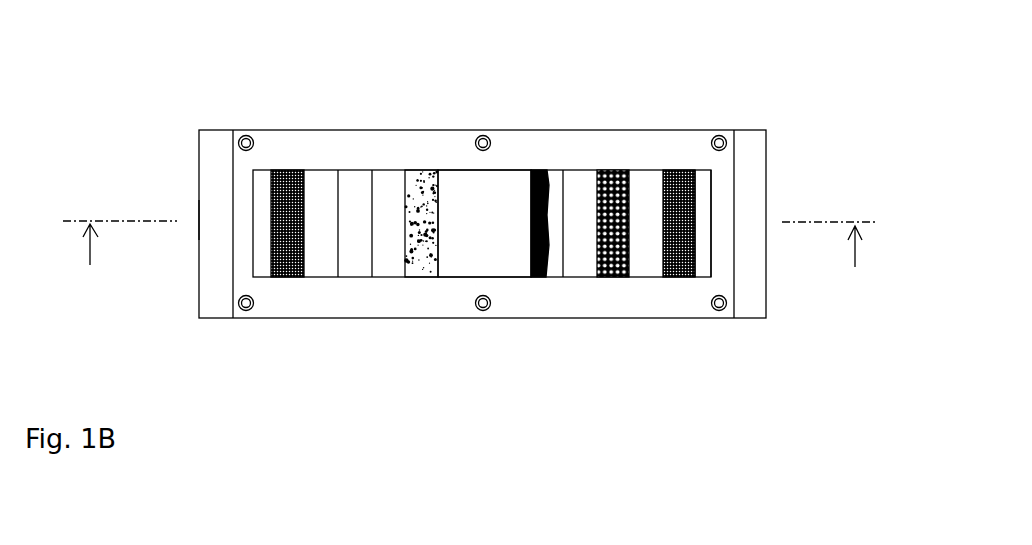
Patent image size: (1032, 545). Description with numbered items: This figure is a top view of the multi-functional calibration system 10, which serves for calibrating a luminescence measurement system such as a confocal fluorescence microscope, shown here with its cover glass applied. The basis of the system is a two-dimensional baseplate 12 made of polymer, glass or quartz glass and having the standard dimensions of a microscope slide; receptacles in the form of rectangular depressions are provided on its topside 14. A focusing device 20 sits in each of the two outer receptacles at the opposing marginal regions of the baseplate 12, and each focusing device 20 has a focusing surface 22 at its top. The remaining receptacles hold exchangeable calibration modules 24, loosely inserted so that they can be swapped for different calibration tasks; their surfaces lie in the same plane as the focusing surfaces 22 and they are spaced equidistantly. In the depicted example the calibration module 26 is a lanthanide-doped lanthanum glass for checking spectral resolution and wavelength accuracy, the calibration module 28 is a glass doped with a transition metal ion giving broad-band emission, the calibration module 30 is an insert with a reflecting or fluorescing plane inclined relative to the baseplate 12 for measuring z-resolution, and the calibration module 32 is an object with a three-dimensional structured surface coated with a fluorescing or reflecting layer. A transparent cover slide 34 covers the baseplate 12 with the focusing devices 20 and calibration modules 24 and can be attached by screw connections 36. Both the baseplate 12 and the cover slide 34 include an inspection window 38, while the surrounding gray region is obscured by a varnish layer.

The calibration system 10 is at (183, 115).
The baseplate 12 is at (214, 173).
The topside 14 is at (215, 210).
The focusing device 20 is at (280, 276).
The focusing surface 22 is at (680, 182).
The calibration modules 24 is at (598, 277).
The calibration module 26 is at (351, 183).
The calibration module 28 is at (420, 185).
The calibration module 30 is at (547, 187).
The calibration module 32 is at (613, 170).
The cover slide 34 is at (296, 145).
The fastener hole 36 is at (484, 134).
The inspection window 38 is at (457, 192).